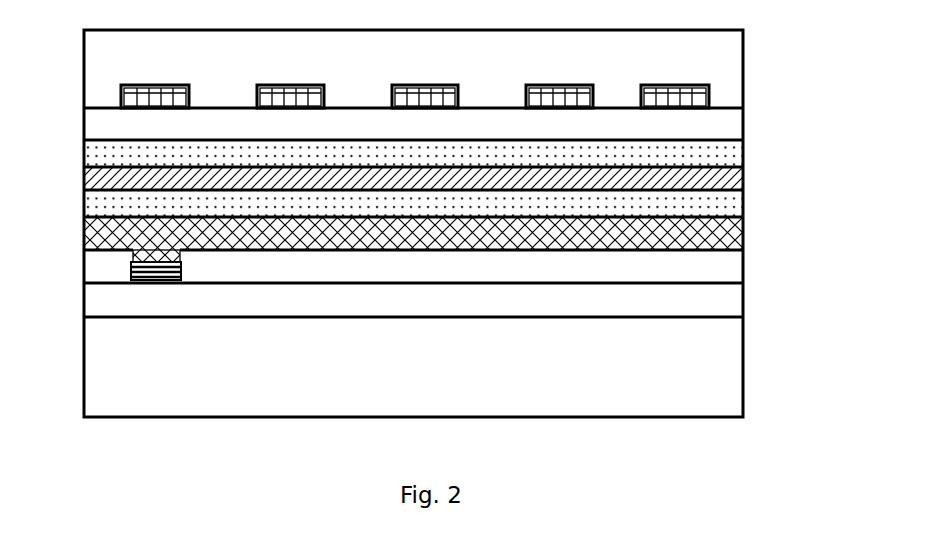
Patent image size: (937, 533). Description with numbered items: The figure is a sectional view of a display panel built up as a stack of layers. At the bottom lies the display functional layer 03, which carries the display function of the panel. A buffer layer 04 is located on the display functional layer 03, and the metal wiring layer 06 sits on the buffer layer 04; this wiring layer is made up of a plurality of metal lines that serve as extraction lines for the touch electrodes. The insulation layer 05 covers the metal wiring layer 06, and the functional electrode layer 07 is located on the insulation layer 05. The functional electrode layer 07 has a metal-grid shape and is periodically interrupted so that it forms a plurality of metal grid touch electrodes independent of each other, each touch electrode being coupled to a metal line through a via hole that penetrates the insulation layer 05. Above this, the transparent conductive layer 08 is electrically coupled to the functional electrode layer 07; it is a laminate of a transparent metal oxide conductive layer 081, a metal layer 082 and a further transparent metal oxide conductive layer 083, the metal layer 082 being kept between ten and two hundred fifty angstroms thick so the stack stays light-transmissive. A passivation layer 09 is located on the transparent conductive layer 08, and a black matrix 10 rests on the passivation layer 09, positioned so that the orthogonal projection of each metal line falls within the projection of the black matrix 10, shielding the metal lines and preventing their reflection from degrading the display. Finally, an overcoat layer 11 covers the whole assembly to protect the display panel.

The display functional layer 03 is at (745, 363).
The buffer layer 04 is at (745, 293).
The insulation layer 05 is at (745, 258).
The metal wiring layer 06 is at (131, 274).
The functional electrode layer 07 is at (745, 230).
The transparent conductive layer 08 is at (496, 171).
The transparent metal oxide conductive layer 081 is at (745, 199).
The metal layer 082 is at (745, 177).
The transparent metal oxide conductive layer 083 is at (745, 155).
The passivation layer 09 is at (745, 118).
The black matrix 10 is at (697, 85).
The overcoat layer 11 is at (698, 45).